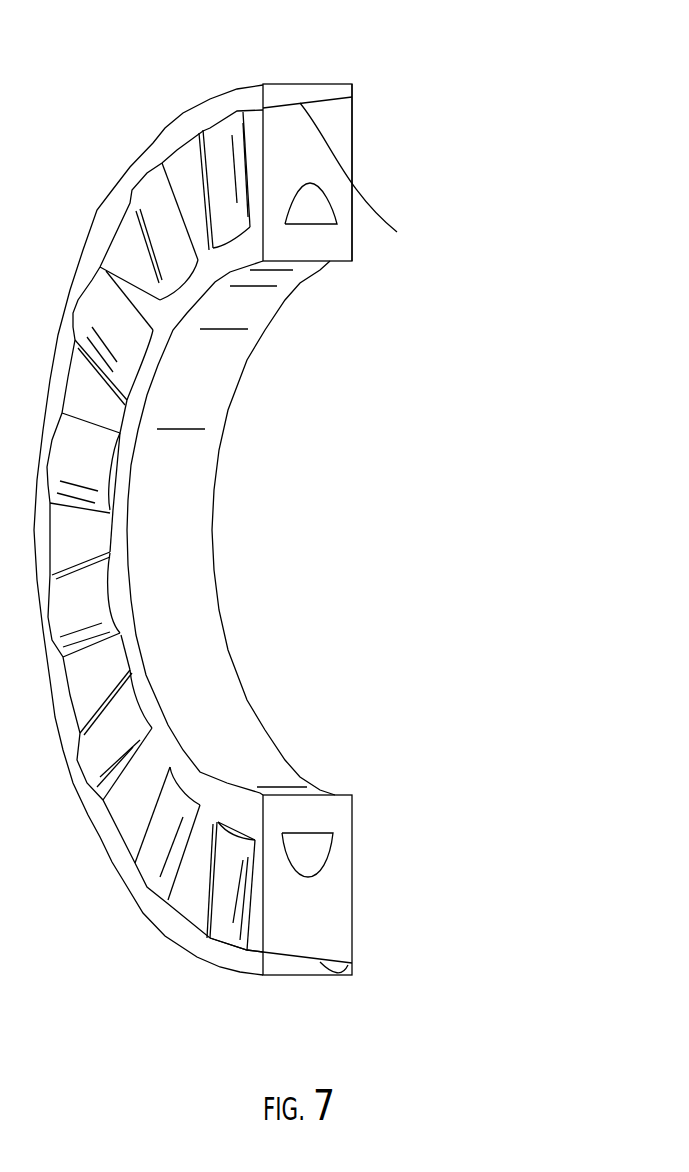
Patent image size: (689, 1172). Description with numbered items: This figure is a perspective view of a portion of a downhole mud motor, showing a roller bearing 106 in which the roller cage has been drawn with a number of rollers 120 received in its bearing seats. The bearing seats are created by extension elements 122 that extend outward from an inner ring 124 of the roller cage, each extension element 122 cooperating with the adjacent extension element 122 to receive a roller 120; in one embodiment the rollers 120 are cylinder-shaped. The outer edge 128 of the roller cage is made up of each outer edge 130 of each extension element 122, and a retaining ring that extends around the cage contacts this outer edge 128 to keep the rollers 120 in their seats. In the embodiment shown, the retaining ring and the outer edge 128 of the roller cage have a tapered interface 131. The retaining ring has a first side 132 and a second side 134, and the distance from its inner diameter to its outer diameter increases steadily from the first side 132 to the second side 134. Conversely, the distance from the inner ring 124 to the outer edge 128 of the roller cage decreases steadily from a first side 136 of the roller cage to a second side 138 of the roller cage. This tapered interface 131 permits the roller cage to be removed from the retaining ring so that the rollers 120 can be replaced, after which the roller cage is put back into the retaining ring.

The roller bearing 106 is at (500, 530).
The rollers 120 is at (217, 147).
The extension elements 122 is at (335, 900).
The inner ring 124 is at (184, 552).
The outer edge 128 is at (348, 965).
The outer edge 130 is at (280, 957).
The tapered interface 131 is at (370, 176).
The first side 132 is at (352, 93).
The second side 134 is at (253, 100).
The first side 136 is at (352, 125).
The second side 138 is at (257, 160).